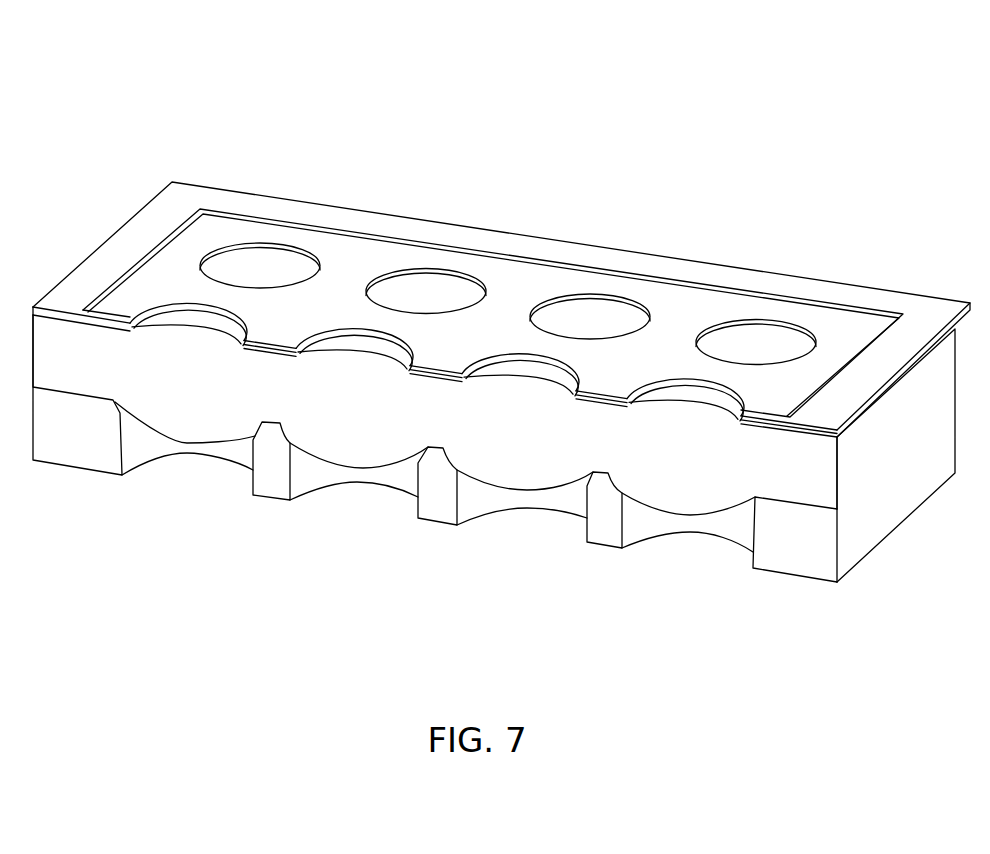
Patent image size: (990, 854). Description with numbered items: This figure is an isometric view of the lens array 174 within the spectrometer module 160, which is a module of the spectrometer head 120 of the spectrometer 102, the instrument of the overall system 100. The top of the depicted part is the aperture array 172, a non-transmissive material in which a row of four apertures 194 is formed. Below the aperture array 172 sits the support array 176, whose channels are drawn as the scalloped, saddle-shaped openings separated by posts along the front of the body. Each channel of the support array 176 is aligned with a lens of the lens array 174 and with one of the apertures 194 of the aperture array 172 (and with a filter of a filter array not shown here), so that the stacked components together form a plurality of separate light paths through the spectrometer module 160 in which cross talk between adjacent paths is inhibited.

The mold assembly 100 is at (114, 89).
The spectrometer 102 is at (223, 72).
The spectrometer head 120 is at (303, 52).
The spectrometer module 160 is at (361, 117).
The aperture array 172 is at (266, 220).
The lens array 174 is at (187, 397).
The support array 176 is at (603, 533).
The apertures 194 is at (772, 333).